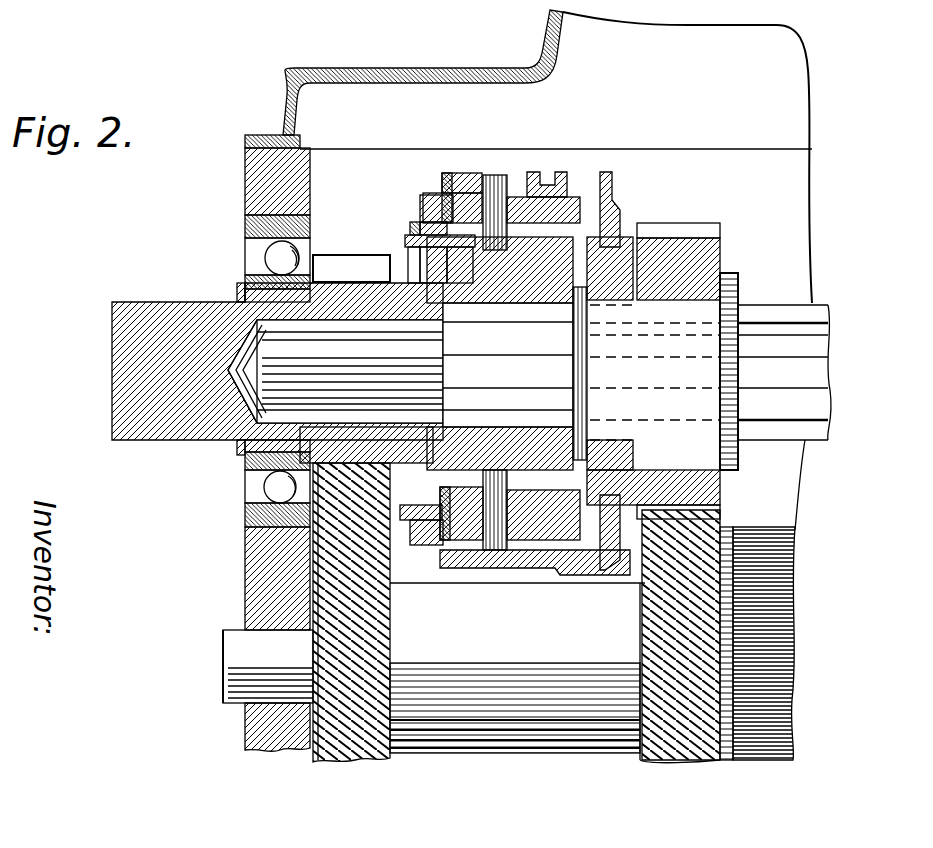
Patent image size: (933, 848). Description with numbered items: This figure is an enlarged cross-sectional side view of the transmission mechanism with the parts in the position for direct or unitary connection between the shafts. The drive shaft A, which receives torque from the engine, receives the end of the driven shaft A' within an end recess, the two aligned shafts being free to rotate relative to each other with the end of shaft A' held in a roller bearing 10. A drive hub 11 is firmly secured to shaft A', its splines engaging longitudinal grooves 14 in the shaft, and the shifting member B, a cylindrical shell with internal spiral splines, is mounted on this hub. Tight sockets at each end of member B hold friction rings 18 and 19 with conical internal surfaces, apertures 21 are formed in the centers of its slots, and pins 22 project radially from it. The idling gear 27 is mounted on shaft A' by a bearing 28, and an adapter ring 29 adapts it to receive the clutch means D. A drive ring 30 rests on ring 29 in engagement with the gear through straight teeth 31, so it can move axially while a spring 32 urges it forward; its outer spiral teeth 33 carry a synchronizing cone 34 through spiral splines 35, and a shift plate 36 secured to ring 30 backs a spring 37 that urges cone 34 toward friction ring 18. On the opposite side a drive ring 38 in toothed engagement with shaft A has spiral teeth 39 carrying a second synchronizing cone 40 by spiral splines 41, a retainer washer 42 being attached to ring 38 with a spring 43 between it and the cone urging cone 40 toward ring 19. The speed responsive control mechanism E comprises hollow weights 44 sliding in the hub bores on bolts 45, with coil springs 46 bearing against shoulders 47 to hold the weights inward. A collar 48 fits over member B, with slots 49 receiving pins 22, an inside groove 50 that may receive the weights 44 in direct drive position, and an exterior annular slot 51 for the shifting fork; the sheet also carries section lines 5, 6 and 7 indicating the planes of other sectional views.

The section line 5 is at (512, 165).
The section line 6 is at (418, 178).
The section line 7 is at (593, 165).
The roller bearing 10 is at (343, 323).
The drive hub 11 is at (555, 292).
The longitudinal grooves 14 is at (812, 328).
The friction ring 18 is at (615, 205).
The friction ring 19 is at (176, 652).
The apertures 21 is at (467, 567).
The pins 22 is at (513, 175).
The idling gear 27 is at (700, 230).
The bearing 28 is at (697, 318).
The adapter ring 29 is at (722, 258).
The drive ring 30 is at (650, 230).
The straight teeth 31 is at (722, 245).
The spring 32 is at (722, 233).
The teeth or splines 33 is at (645, 233).
The synchronizing cone 34 is at (625, 195).
The spiral splines 35 is at (630, 215).
The shift plate 36 is at (605, 178).
The spring 37 is at (628, 205).
The drive ring 38 is at (425, 240).
The teeth or splines 39 is at (420, 220).
The second synchronizing cone 40 is at (418, 205).
The spiral splines 41 is at (422, 225).
The retainer washer 42 is at (422, 232).
The spring 43 is at (418, 212).
The hollow weights 44 is at (543, 563).
The bolts 45 is at (585, 450).
The coil springs 46 is at (650, 403).
The shoulders 47 is at (593, 462).
The collar 48 is at (450, 173).
The slots 49 is at (466, 178).
The groove 50 is at (495, 575).
The exterior annular slot 51 is at (548, 175).
The drive shaft A is at (277, 381).
The driven shaft A' is at (866, 289).
The shifting member B is at (565, 197).
The clutch means D is at (682, 149).
The speed responsive control mechanism E is at (483, 570).